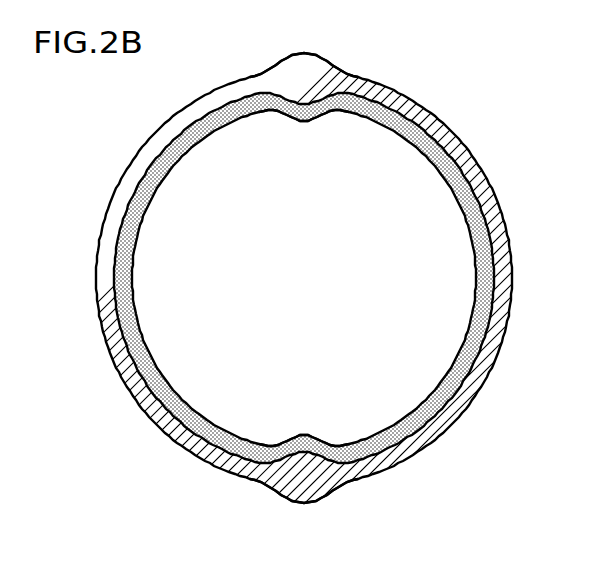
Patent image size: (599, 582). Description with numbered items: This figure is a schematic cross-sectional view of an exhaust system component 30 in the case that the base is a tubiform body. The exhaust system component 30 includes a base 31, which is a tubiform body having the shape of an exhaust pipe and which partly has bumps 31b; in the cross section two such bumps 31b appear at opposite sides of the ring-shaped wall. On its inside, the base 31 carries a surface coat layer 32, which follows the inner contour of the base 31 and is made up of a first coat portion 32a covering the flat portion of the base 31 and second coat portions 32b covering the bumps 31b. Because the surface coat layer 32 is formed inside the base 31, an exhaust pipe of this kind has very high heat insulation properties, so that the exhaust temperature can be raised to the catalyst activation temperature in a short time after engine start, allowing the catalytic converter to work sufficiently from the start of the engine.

The exhaust system component 30 is at (299, 291).
The base 31 is at (299, 291).
The bumps 31b is at (313, 68).
The surface coat layer 32 is at (321, 286).
The first coat portion 32a is at (423, 114).
The second coat portions 32b is at (280, 98).